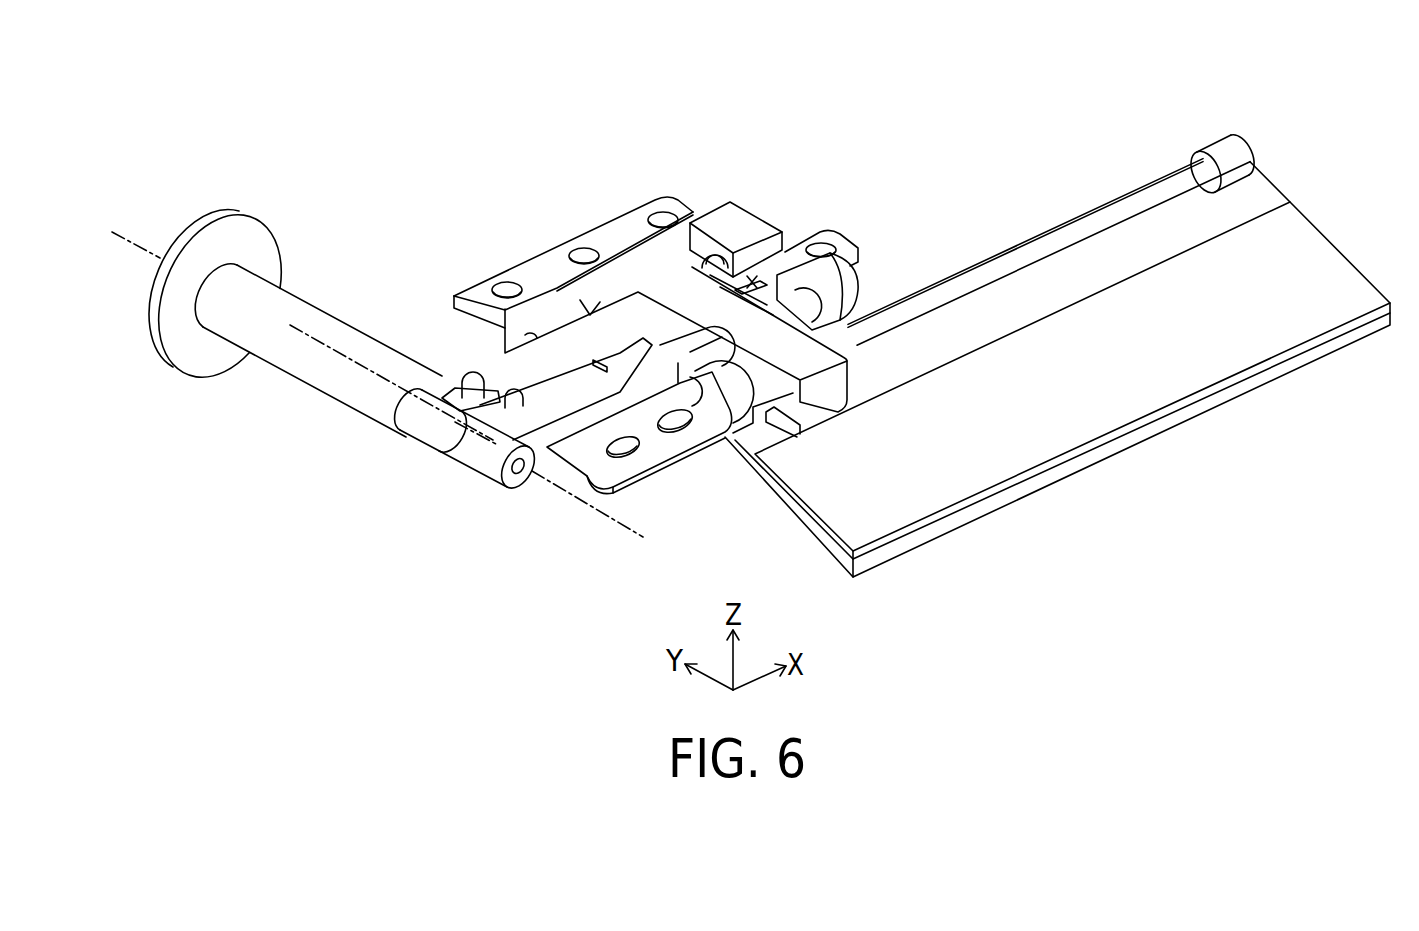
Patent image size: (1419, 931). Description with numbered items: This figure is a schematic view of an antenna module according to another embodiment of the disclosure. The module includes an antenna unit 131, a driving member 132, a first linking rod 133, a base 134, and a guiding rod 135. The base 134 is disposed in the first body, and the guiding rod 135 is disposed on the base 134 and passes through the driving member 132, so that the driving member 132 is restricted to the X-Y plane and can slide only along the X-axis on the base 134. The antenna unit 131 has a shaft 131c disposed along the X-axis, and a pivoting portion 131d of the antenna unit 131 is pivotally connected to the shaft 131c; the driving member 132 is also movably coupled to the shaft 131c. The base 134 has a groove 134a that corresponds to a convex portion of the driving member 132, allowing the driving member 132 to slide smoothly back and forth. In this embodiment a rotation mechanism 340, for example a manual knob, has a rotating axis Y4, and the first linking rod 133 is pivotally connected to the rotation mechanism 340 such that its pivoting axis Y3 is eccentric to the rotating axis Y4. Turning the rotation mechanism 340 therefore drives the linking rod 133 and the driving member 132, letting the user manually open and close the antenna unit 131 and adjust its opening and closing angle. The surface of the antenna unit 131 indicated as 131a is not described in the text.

The antenna unit 131 is at (1057, 415).
The plate top surface layer 131a is at (1118, 398).
The shaft 131c is at (1090, 222).
The pivoting portion 131d is at (1228, 155).
The driving member 132 is at (665, 300).
The first linking rod 133 is at (462, 392).
The base 134 is at (553, 240).
The groove 134a is at (752, 285).
The guiding rod 135 is at (708, 262).
The rotation mechanism 340 is at (192, 228).
The pivoting axis Y3 is at (347, 357).
The rotating axis Y4 is at (633, 530).